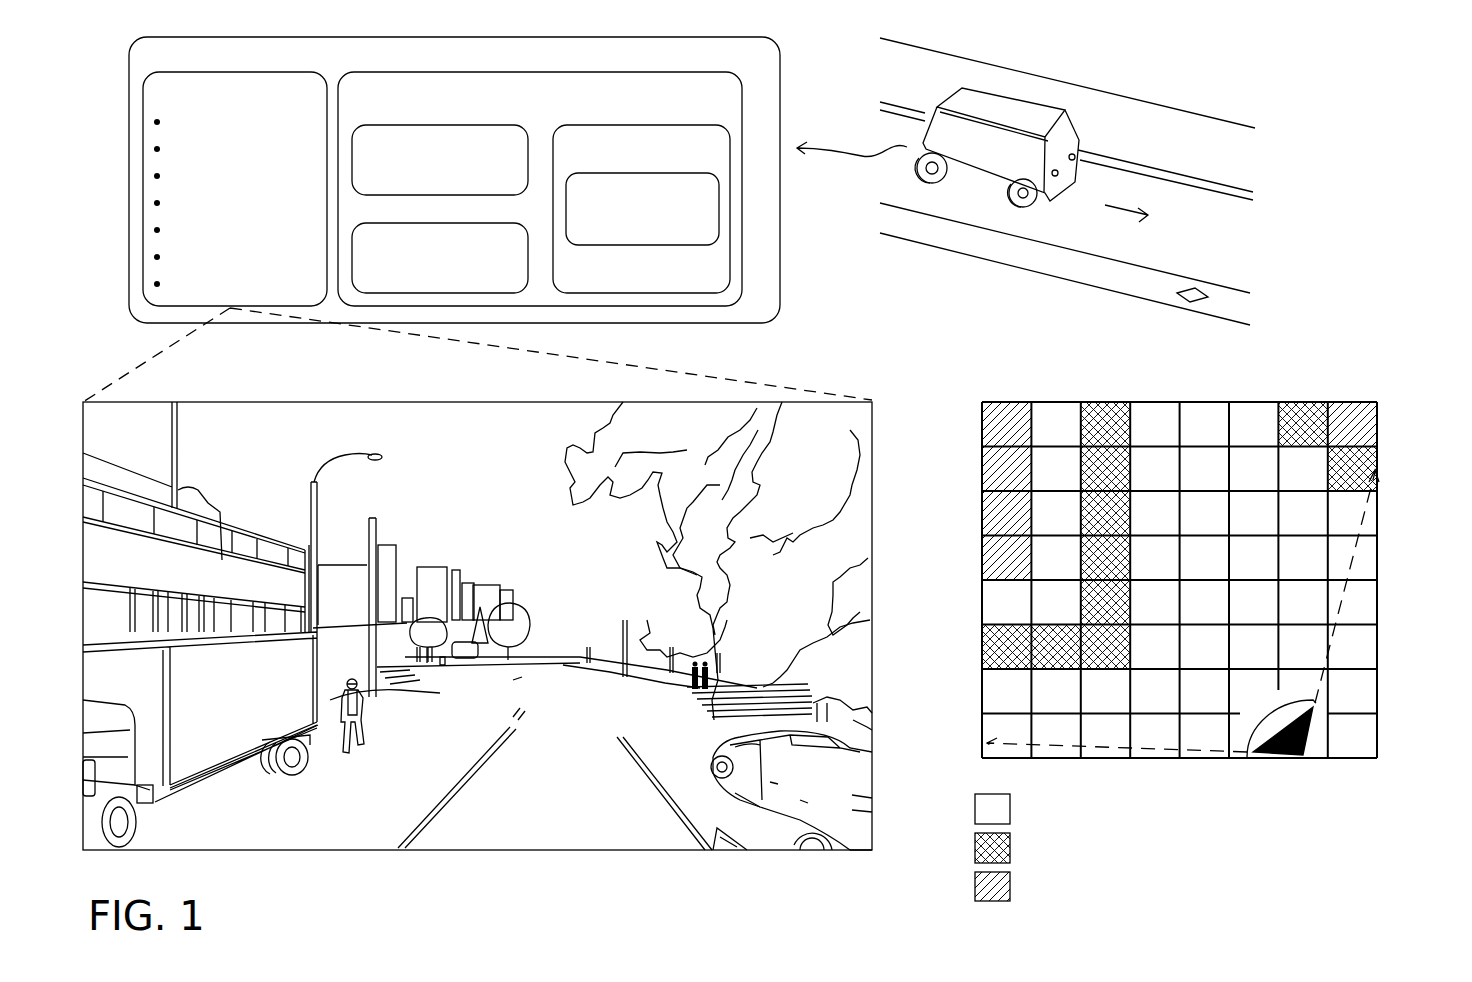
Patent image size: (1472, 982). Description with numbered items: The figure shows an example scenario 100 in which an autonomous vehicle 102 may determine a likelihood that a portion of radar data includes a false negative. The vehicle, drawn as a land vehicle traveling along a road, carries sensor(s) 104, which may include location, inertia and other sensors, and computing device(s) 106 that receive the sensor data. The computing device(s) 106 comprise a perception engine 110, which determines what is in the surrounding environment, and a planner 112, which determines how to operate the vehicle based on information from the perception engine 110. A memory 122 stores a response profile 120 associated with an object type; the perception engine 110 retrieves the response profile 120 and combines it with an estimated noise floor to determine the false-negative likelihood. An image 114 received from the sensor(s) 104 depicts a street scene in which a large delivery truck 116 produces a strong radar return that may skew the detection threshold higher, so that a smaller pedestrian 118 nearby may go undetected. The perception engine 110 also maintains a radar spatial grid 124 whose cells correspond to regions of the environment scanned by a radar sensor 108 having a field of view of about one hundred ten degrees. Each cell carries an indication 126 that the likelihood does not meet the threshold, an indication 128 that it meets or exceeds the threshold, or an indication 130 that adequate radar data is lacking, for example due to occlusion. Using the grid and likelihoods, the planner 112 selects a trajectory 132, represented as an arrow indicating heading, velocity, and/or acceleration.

The example scenario 100 is at (1303, 119).
The autonomous vehicle 102 is at (560, 63).
The sensor(s) 104 is at (295, 103).
The computing device(s) 106 is at (645, 103).
The radar sensor 108 is at (1282, 757).
The perception engine 110 is at (455, 185).
The planner 112 is at (493, 270).
The image 114 is at (410, 402).
The delivery truck 116 is at (210, 808).
The pedestrian 118 is at (407, 710).
The response profile 120 is at (693, 233).
The memory 122 is at (695, 158).
The radar spatial grid 124 is at (1150, 402).
The indication 126 is at (1128, 809).
The indication 128 is at (1181, 848).
The indication 130 is at (1096, 886).
The trajectory 132 is at (1168, 250).